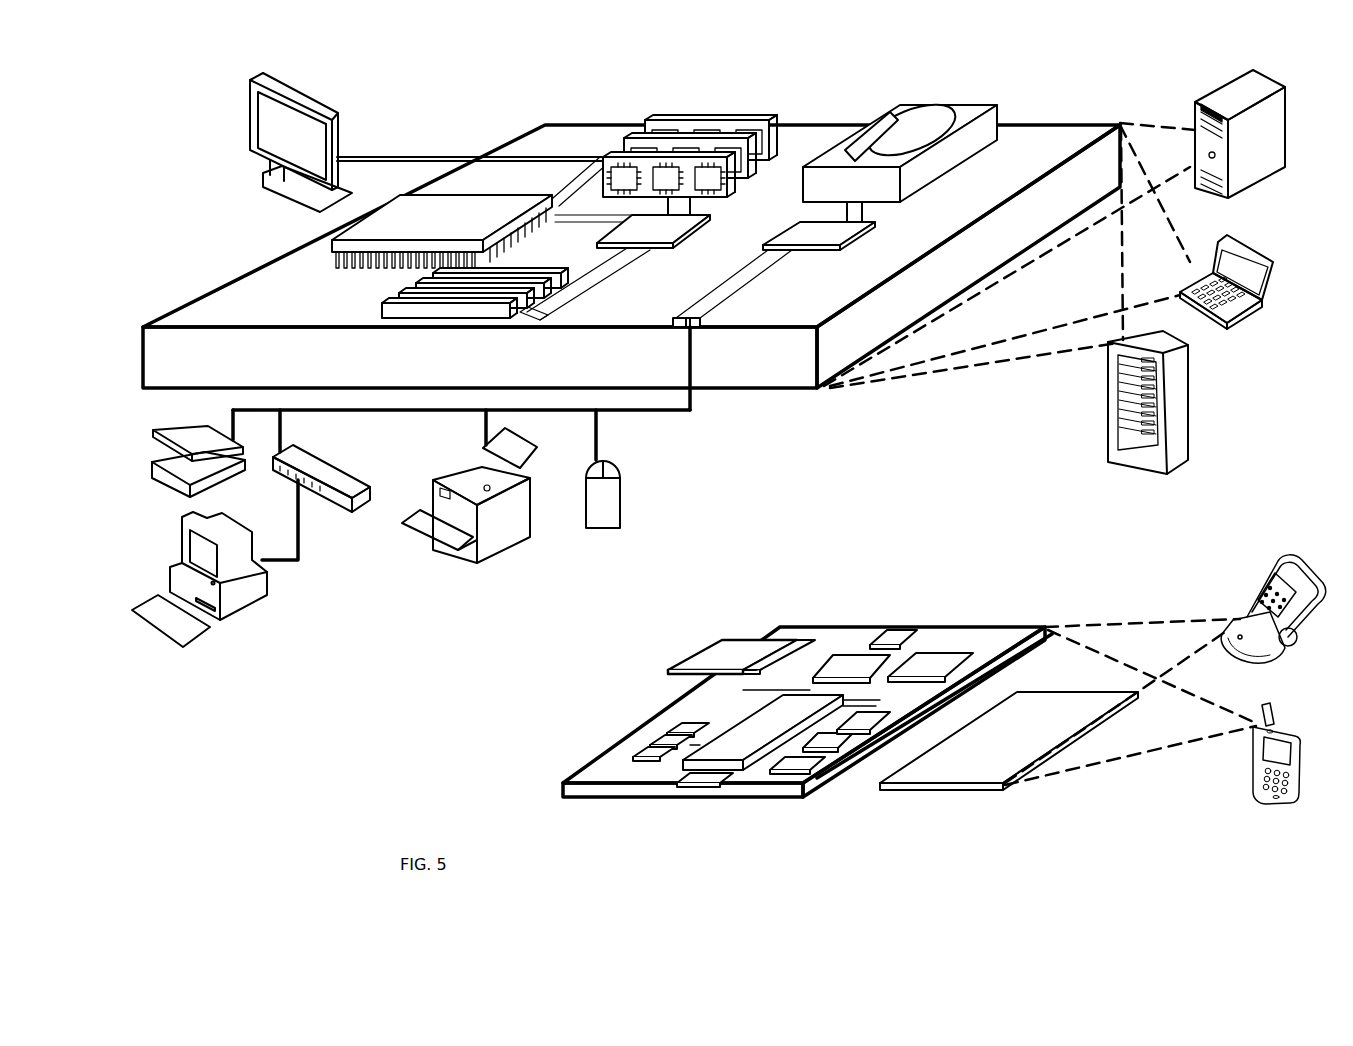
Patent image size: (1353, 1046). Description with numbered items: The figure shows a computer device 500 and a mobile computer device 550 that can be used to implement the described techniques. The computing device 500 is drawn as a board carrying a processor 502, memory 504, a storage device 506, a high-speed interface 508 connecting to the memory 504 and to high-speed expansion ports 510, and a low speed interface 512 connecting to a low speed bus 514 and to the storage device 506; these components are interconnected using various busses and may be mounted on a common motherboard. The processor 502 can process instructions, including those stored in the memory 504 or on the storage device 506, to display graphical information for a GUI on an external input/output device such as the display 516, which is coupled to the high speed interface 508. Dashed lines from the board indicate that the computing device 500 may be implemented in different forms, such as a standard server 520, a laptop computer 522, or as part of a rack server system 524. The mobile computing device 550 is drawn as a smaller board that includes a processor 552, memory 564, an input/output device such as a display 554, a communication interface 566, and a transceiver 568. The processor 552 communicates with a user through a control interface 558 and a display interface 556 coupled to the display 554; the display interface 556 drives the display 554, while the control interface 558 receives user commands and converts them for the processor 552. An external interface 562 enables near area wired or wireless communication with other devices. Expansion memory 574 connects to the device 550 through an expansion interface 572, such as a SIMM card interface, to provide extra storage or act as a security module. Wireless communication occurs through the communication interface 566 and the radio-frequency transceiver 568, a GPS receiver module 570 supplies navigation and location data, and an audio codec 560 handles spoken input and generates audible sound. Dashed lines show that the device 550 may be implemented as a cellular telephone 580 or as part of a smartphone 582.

The computing device 500 is at (458, 96).
The processor 502 is at (330, 248).
The memory 504 is at (656, 120).
The storage device 506 is at (905, 123).
The high-speed interface 508 is at (630, 228).
The high-speed expansion ports 510 is at (403, 290).
The low speed interface 512 is at (820, 232).
The low speed bus 514 is at (703, 330).
The display 516 is at (253, 84).
The standard server 520 is at (1196, 110).
The laptop computer 522 is at (1228, 258).
The rack server system 524 is at (1110, 455).
The mobile computer device 550 is at (782, 596).
The processor 552 is at (738, 775).
The display 554 is at (1003, 792).
The display interface 556 is at (812, 775).
The control interface 558 is at (846, 750).
The audio codec 560 is at (852, 732).
The external interface 562 is at (700, 785).
The memory 564 is at (655, 750).
The communication interface 566 is at (853, 660).
The transceiver 568 is at (928, 660).
The GPS receiver module 570 is at (893, 632).
The expansion interface 572 is at (782, 640).
The expansion memory 574 is at (714, 640).
The cellular telephone 580 is at (1283, 577).
The smartphone 582 is at (1262, 712).